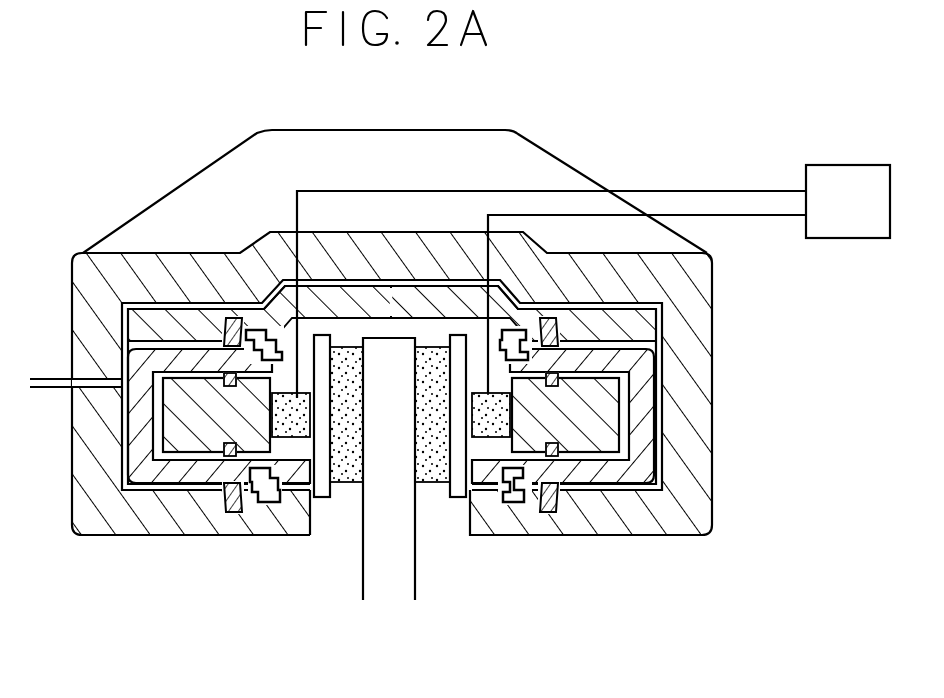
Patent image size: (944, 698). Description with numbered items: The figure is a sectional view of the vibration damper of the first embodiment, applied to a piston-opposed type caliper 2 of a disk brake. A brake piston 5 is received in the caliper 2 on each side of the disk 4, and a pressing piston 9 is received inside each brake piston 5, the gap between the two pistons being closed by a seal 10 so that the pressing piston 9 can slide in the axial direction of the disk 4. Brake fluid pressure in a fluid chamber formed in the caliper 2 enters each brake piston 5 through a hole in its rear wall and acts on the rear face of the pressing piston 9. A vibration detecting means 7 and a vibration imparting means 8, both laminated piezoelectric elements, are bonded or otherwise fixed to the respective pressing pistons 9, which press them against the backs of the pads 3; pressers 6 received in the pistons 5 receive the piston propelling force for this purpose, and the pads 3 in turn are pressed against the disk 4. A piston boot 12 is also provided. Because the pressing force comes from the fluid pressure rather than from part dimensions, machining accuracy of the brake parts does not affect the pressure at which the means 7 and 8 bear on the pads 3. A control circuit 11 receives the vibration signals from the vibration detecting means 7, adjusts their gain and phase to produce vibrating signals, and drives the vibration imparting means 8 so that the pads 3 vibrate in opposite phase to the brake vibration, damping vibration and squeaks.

The caliper 2 is at (100, 283).
The pads 3 is at (345, 485).
The disk 4 is at (392, 590).
The brake piston 5 is at (130, 450).
The pressers 6 is at (233, 512).
The vibration detecting means 7 is at (293, 335).
The vibration imparting means 8 is at (487, 437).
The pressing piston 9 is at (187, 440).
The seal 10 is at (233, 455).
The control circuit 11 is at (835, 174).
The piston boot 12 is at (267, 502).